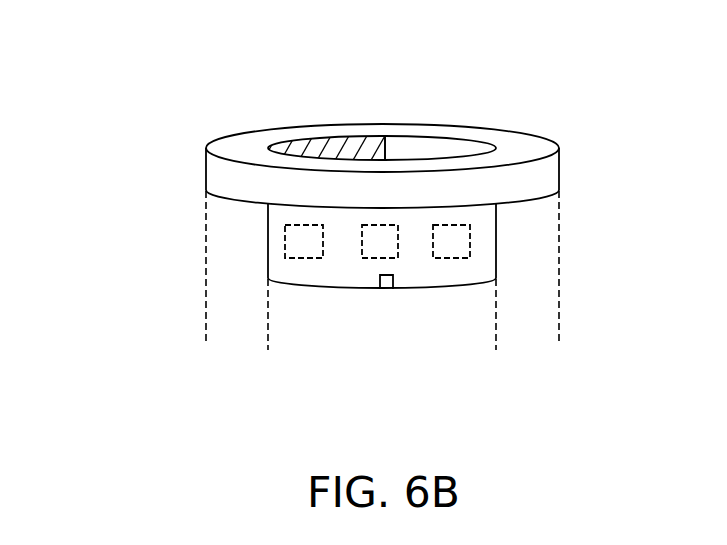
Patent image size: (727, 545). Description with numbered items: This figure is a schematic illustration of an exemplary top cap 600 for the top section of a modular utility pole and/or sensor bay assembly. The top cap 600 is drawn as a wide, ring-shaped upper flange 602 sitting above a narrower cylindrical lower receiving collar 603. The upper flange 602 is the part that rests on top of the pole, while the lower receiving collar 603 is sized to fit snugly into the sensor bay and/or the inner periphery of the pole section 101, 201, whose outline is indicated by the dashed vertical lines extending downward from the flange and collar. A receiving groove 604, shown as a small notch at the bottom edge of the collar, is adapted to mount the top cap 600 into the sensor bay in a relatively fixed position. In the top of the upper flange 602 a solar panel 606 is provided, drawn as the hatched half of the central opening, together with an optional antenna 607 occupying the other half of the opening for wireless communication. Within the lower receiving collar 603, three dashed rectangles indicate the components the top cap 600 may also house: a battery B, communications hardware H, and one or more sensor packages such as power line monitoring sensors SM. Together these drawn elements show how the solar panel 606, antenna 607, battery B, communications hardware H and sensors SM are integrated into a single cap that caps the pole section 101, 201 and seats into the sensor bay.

The top cap 600 is at (600, 89).
The upper flange 602 is at (218, 170).
The solar panel 606 is at (338, 147).
The antenna 607 is at (410, 148).
The pole section 101 is at (298, 270).
The pole section 201 is at (219, 257).
The lower receiving collar 603 is at (330, 265).
The receiving groove 604 is at (388, 286).
The battery B is at (305, 240).
The communications hardware H is at (380, 240).
The power line monitoring sensors SM is at (452, 242).